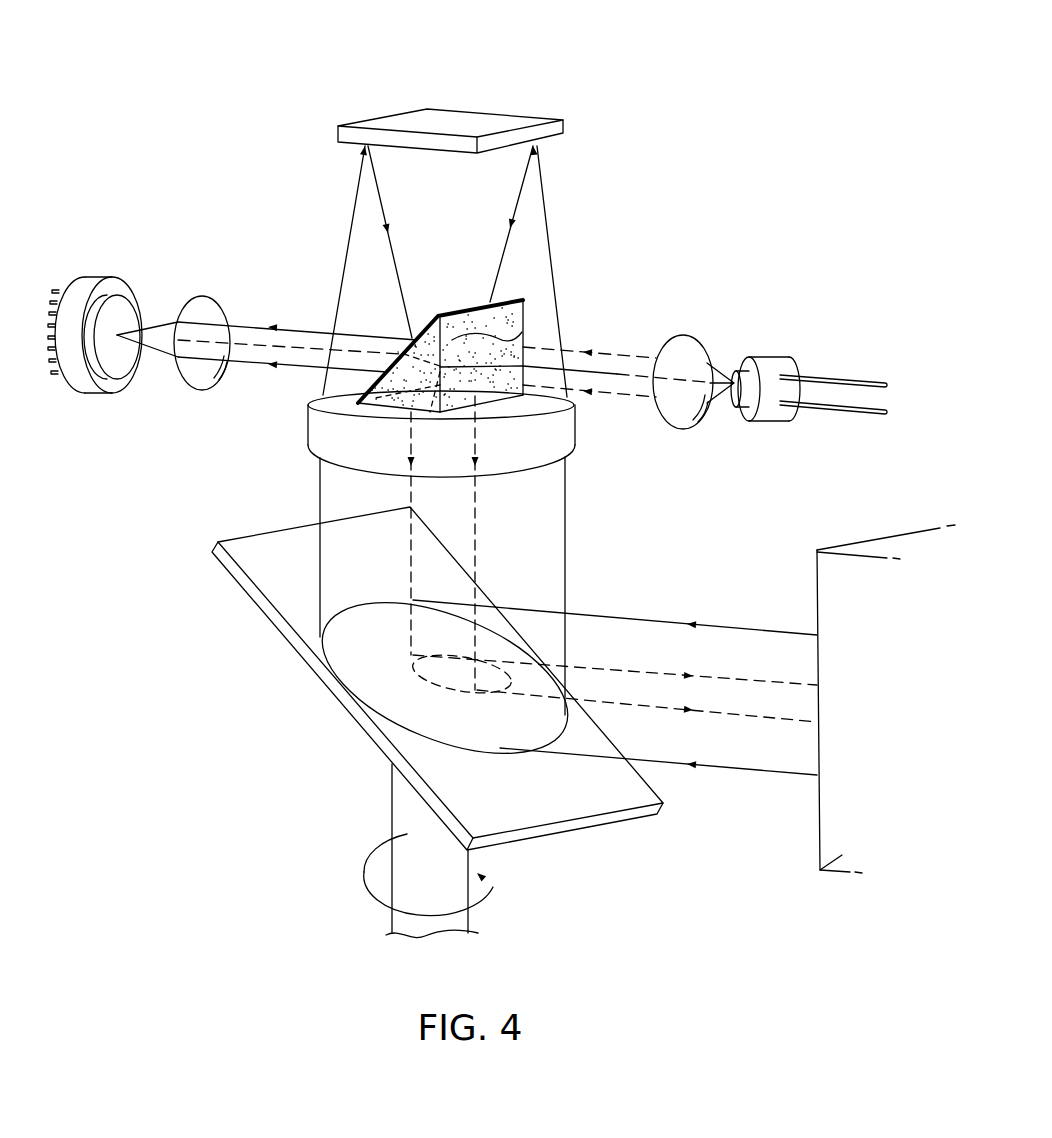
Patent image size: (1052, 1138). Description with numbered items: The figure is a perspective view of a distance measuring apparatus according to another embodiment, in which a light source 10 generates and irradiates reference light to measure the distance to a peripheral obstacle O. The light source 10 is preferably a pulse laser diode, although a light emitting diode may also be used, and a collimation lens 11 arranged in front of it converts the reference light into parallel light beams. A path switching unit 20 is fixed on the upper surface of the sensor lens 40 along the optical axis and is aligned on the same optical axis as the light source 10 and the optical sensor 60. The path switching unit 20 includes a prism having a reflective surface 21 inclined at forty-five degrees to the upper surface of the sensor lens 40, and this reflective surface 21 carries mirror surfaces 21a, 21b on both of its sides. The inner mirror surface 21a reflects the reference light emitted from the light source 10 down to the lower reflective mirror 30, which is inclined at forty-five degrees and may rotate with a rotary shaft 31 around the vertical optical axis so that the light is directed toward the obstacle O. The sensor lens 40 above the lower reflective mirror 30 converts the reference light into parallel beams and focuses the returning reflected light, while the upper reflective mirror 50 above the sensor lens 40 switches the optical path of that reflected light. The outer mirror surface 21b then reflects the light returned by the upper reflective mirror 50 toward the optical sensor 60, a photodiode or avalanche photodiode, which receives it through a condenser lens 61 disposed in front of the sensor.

The light source 10 is at (758, 412).
The collimation lens 11 is at (678, 417).
The path switching unit 20 is at (467, 374).
The reflective surface 21 is at (532, 322).
The inner mirror surface 21a is at (495, 325).
The outer mirror surface 21b is at (488, 302).
The lower reflective mirror 30 is at (262, 607).
The rotary shaft 31 is at (408, 830).
The sensor lens 40 is at (310, 428).
The upper reflective mirror 50 is at (448, 120).
The optical sensor 60 is at (118, 283).
The condenser lens 61 is at (208, 307).
The peripheral obstacle O is at (835, 867).